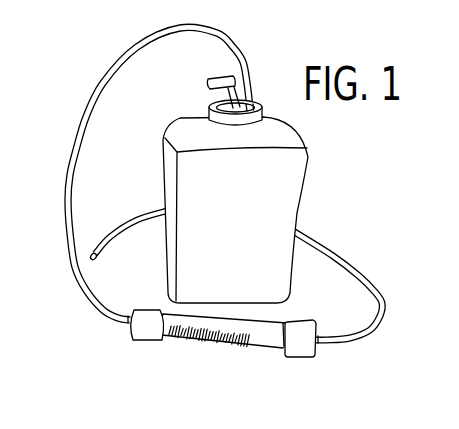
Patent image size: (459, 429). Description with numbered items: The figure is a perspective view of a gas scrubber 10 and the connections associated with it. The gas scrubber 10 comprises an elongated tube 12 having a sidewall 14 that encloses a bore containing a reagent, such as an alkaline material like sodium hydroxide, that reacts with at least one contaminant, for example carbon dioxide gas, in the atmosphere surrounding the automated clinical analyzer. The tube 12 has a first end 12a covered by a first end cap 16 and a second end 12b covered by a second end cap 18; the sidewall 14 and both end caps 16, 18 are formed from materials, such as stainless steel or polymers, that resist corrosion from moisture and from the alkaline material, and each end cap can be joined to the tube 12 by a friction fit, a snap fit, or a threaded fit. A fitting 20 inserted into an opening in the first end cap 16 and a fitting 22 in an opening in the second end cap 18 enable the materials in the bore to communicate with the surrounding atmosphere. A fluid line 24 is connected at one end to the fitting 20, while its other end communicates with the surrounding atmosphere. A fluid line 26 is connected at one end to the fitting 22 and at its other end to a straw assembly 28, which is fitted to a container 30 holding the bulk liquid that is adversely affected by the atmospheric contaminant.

The gas scrubber 10 is at (216, 347).
The elongated tube 12 is at (212, 361).
The first end 12a is at (279, 349).
The second end 12b is at (167, 340).
The sidewall 14 is at (218, 348).
The first end cap 16 is at (306, 348).
The second end cap 18 is at (146, 327).
The fitting 20 is at (323, 335).
The fitting 22 is at (126, 317).
The fluid line 24 is at (375, 320).
The fluid line 26 is at (79, 145).
The straw assembly 28 is at (212, 77).
The container 30 is at (293, 193).